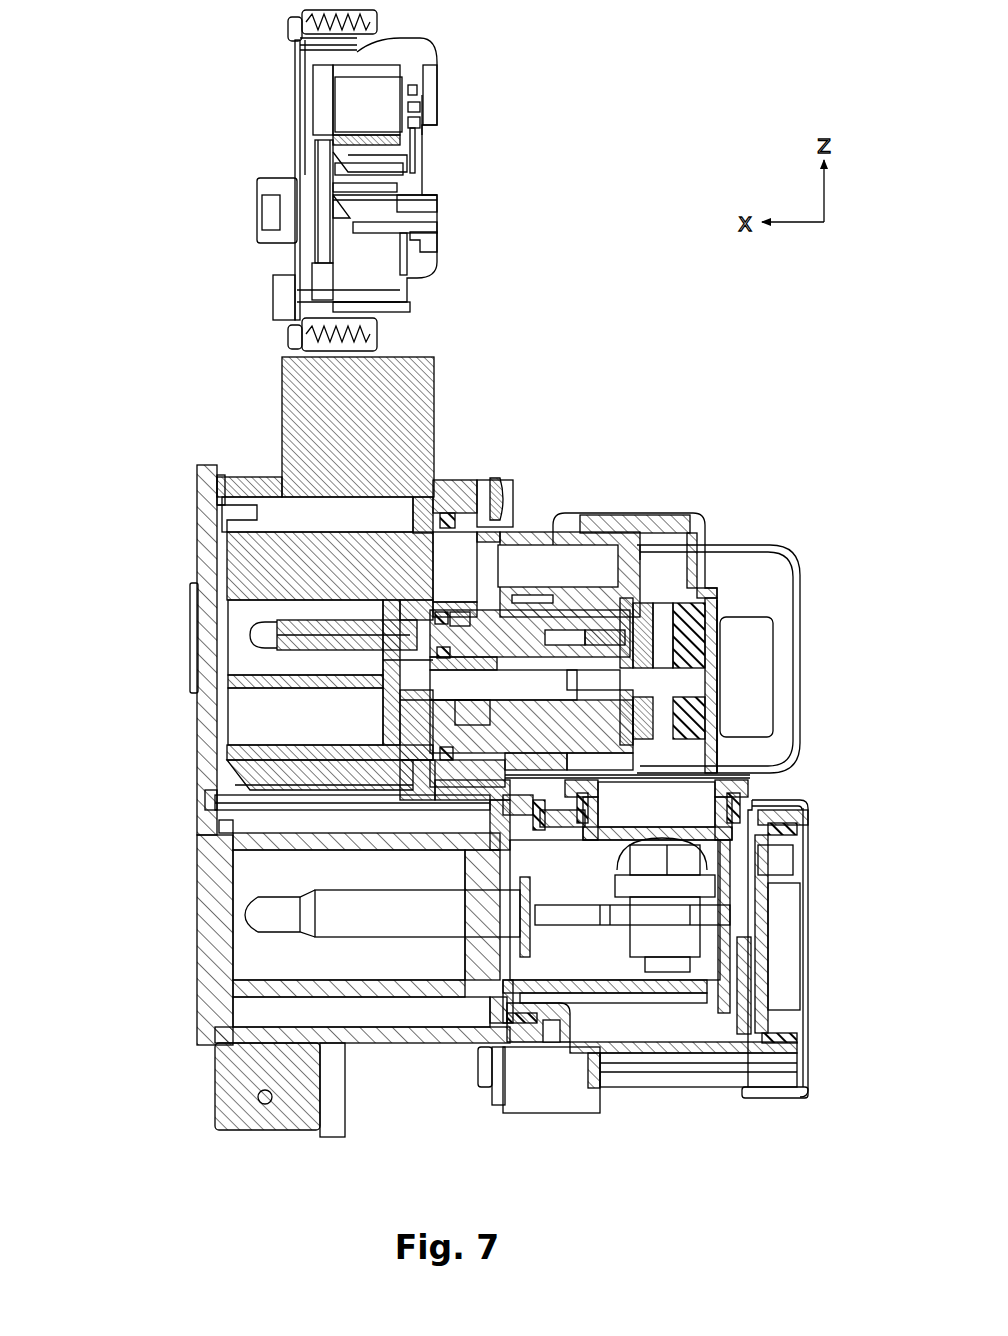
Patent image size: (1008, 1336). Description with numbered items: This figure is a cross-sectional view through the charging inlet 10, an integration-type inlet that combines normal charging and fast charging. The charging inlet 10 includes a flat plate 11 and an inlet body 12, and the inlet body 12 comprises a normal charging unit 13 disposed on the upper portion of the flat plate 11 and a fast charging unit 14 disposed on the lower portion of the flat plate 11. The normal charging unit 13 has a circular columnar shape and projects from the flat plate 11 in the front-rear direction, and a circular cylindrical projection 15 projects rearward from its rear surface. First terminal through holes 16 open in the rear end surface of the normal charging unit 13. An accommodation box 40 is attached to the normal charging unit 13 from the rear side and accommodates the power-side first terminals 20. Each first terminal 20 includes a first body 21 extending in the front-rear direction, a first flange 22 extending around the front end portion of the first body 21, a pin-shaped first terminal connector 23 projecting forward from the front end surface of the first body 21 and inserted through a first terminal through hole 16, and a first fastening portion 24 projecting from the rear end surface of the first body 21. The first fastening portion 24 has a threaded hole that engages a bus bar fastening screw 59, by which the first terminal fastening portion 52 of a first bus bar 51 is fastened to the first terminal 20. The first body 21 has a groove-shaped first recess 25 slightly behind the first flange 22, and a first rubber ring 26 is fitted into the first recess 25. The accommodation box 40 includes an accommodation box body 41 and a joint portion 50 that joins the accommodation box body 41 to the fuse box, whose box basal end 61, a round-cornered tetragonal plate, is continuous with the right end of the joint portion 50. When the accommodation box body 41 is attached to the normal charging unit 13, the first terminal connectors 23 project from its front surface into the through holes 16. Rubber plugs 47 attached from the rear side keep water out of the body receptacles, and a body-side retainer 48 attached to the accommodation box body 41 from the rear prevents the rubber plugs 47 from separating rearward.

The charging inlet 10 is at (155, 66).
The flat plate 11 is at (305, 1125).
The inlet body 12 is at (294, 755).
The normal charging unit 13 is at (183, 657).
The fast charging unit 14 is at (313, 915).
The circular cylindrical projection 15 is at (448, 507).
The first terminal through holes 16 is at (390, 640).
The first terminal 20 is at (237, 637).
The first body 21 is at (480, 692).
The first flange 22 is at (470, 663).
The first terminal connector 23 is at (308, 638).
The first fastening portion 24 is at (620, 620).
The first recess 25 is at (432, 722).
The first rubber ring 26 is at (455, 622).
The accommodation box 40 is at (650, 598).
The accommodation box body 41 is at (590, 590).
The rubber plug 47 is at (710, 608).
The body-side retainer 48 is at (715, 632).
The joint portion 50 is at (762, 660).
The first bus bar 51 is at (626, 717).
The first terminal fastening portion 52 is at (630, 596).
The bus bar fastening screw 59 is at (645, 608).
The box basal end 61 is at (752, 567).